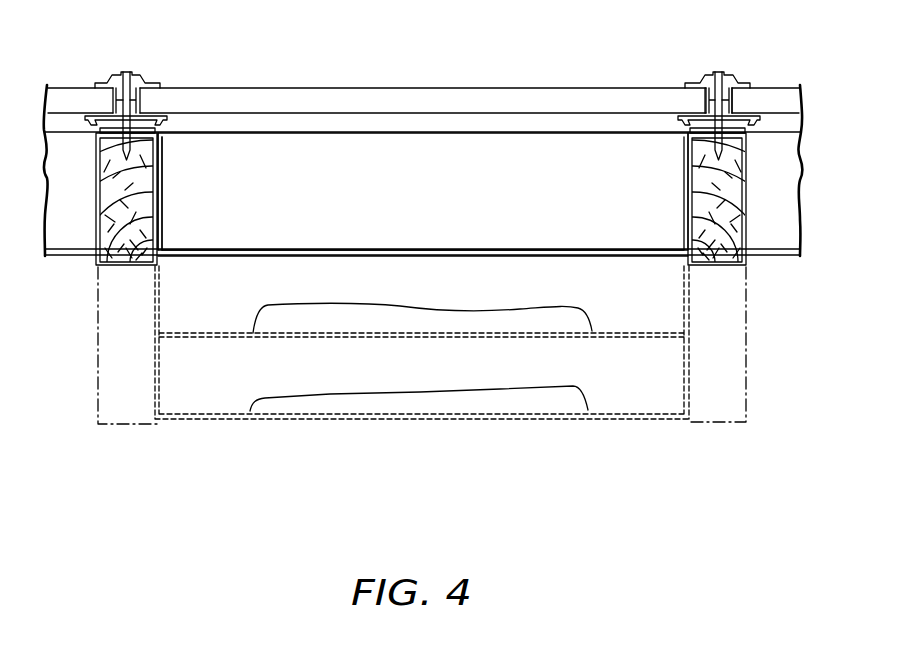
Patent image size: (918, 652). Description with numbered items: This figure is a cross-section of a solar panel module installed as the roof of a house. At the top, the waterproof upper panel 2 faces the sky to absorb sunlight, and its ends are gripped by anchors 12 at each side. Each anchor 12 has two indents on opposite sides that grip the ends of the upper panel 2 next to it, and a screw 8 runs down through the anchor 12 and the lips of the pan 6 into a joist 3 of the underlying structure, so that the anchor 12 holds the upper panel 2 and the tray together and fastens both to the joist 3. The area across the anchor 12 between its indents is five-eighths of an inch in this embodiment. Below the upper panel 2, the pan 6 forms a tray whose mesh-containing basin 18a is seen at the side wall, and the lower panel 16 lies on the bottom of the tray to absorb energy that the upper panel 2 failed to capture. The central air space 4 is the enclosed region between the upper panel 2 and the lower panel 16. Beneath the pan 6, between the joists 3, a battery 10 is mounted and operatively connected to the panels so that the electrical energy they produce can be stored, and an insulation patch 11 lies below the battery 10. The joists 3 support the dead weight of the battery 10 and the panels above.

The upper panel 2 is at (514, 88).
The joist 3 is at (130, 267).
The central air space 4 is at (301, 165).
The pan 6 is at (221, 133).
The screw 8 is at (126, 71).
The battery 10 is at (425, 312).
The insulation patch 11 is at (418, 392).
The anchor 12 is at (113, 80).
The lower panel 16 is at (510, 249).
The mesh-containing basin 18a is at (162, 185).